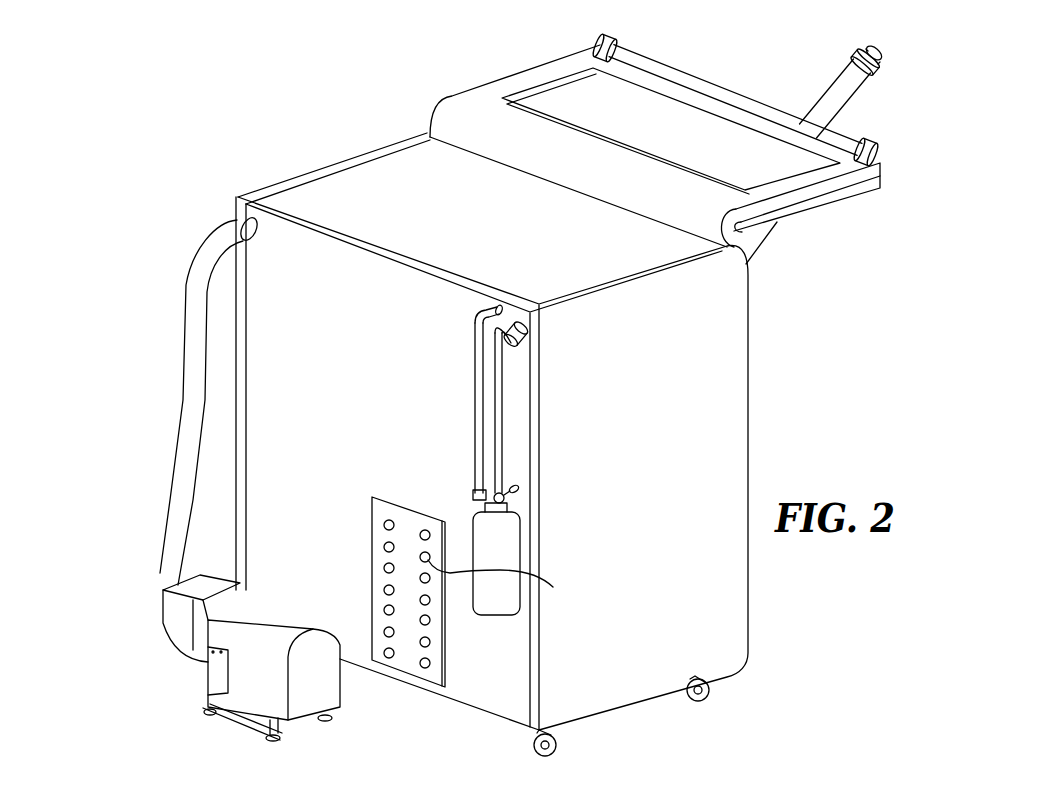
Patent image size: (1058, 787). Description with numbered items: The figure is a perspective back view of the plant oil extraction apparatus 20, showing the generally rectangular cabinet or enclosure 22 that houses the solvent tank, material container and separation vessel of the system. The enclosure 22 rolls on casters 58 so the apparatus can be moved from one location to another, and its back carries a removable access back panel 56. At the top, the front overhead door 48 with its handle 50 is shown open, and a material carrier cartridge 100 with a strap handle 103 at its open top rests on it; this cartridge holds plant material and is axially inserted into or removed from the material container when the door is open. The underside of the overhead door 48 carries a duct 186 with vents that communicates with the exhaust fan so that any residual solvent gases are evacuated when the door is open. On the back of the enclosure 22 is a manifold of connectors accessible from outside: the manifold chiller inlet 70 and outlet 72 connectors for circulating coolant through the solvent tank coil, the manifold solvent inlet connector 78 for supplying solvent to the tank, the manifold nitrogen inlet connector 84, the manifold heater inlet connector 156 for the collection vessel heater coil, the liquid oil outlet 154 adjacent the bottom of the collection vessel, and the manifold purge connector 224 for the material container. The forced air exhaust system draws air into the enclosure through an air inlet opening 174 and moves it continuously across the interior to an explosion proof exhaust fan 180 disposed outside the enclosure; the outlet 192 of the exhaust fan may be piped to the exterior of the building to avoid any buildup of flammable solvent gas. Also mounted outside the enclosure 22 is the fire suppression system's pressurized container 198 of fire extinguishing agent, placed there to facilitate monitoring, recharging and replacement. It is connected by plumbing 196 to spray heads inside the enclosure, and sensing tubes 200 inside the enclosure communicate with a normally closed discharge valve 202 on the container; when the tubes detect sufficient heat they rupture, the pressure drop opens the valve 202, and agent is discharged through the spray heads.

The plant oil extraction apparatus 20 is at (328, 98).
The cabinet or enclosure 22 is at (305, 158).
The front overhead door 48 is at (543, 66).
The handle 50 is at (722, 86).
The removable access back panel 56 is at (323, 310).
The casters 58 is at (708, 687).
The manifold chiller inlet connector 70 is at (432, 604).
The manifold chiller outlet connector 72 is at (388, 590).
The manifold solvent inlet connector 78 is at (425, 530).
The manifold nitrogen inlet connector 84 is at (389, 520).
The material carrier cartridge 100 is at (828, 78).
The strap handle 103 is at (874, 44).
The liquid oil outlet 154 is at (390, 658).
The manifold heater inlet connector 156 is at (425, 668).
The air inlet opening 174 is at (497, 363).
The explosion proof exhaust fan 180 is at (198, 685).
The duct 186 is at (814, 208).
The outlet of the exhaust fan 192 is at (162, 622).
The plumbing 196 is at (475, 343).
The pressurized container 198 is at (515, 543).
The sensing tubes 200 is at (500, 392).
The normally closed discharge valve 202 is at (512, 493).
The manifold purge connector 224 is at (513, 581).